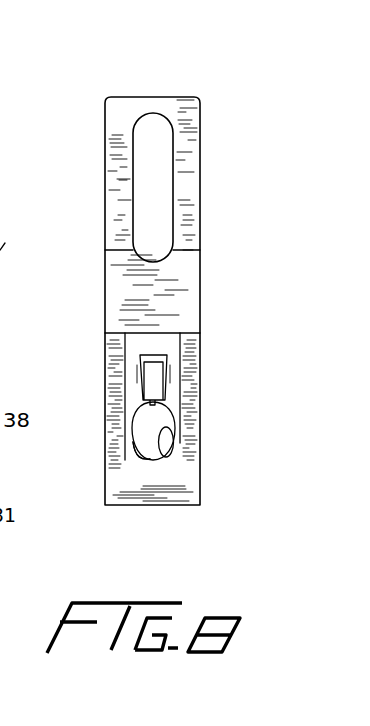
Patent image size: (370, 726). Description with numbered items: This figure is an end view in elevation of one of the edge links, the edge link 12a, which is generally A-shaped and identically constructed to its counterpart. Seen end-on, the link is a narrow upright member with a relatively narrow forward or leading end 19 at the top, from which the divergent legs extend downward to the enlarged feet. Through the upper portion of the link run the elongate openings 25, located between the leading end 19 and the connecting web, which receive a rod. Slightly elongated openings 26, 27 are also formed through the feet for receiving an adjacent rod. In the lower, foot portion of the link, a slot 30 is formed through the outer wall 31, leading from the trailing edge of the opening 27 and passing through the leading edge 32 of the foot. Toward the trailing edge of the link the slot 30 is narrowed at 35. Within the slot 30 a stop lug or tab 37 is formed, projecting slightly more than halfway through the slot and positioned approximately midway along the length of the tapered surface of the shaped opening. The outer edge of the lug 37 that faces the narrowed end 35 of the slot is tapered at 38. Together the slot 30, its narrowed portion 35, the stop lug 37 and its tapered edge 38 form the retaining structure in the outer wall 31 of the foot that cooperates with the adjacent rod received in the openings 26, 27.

The leading end 19 is at (155, 97).
The elongate openings 25 is at (135, 146).
The edge link 12a is at (105, 302).
The leading edge 32 is at (114, 340).
The slot 30 is at (180, 346).
The stop lug 37 is at (155, 380).
The narrowed portion of slot 35 is at (133, 443).
The tapered edge of lug 38 is at (153, 408).
The elongated opening 26 is at (157, 455).
The elongated opening 27 is at (223, 530).
The outer wall 31 is at (137, 482).